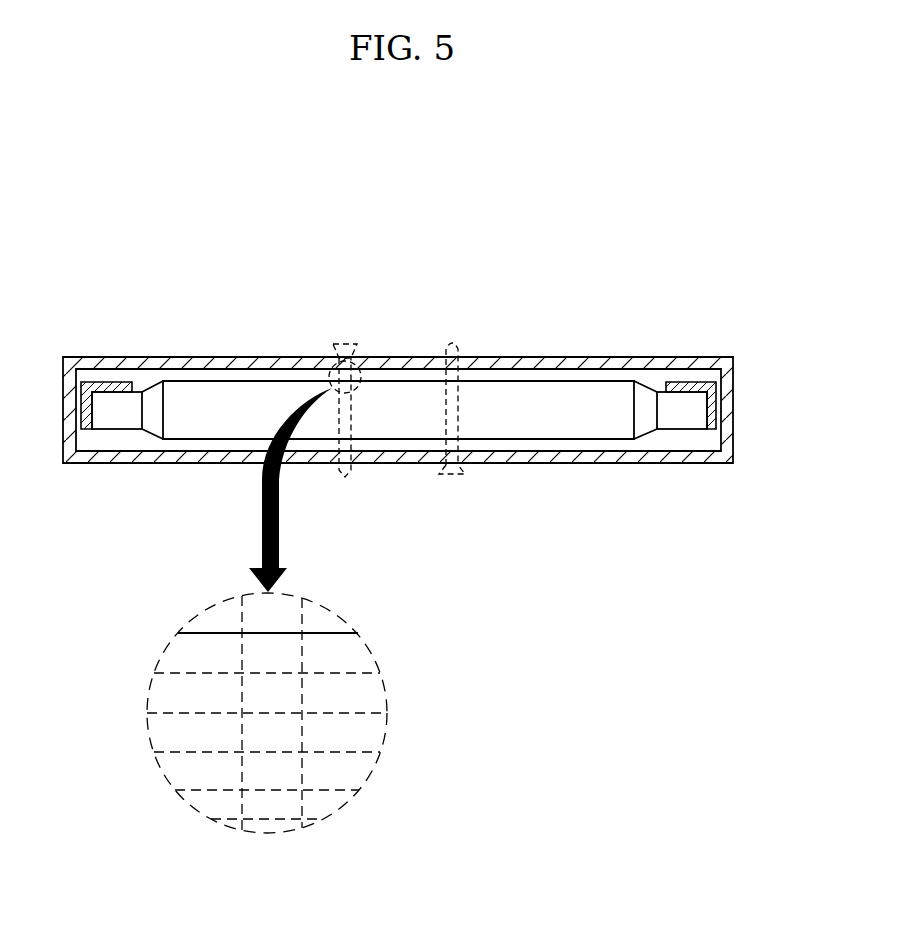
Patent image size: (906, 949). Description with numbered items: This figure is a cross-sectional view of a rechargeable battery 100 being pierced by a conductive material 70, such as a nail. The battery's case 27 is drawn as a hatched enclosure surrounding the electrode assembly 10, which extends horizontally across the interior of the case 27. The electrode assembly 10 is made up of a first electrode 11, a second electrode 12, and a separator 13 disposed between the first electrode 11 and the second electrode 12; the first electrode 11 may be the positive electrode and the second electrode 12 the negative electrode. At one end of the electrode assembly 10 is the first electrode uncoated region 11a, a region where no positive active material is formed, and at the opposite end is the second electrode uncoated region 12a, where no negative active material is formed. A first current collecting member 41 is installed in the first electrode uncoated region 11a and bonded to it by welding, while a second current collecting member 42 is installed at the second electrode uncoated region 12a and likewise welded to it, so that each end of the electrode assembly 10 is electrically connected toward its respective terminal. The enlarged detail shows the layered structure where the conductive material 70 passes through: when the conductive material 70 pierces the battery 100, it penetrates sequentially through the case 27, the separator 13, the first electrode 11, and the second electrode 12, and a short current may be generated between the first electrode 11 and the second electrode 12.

The display device 100 is at (415, 212).
The electrode assembly 10 is at (531, 396).
The first electrode 11 is at (353, 652).
The first electrode uncoated region 11a is at (683, 406).
The second electrode 12 is at (369, 733).
The second electrode uncoated region 12a is at (116, 406).
The separator 13 is at (369, 695).
The case 27 is at (552, 456).
The first current collecting member 41 is at (712, 427).
The second current collecting member 42 is at (87, 428).
The conductive material 70 is at (345, 342).